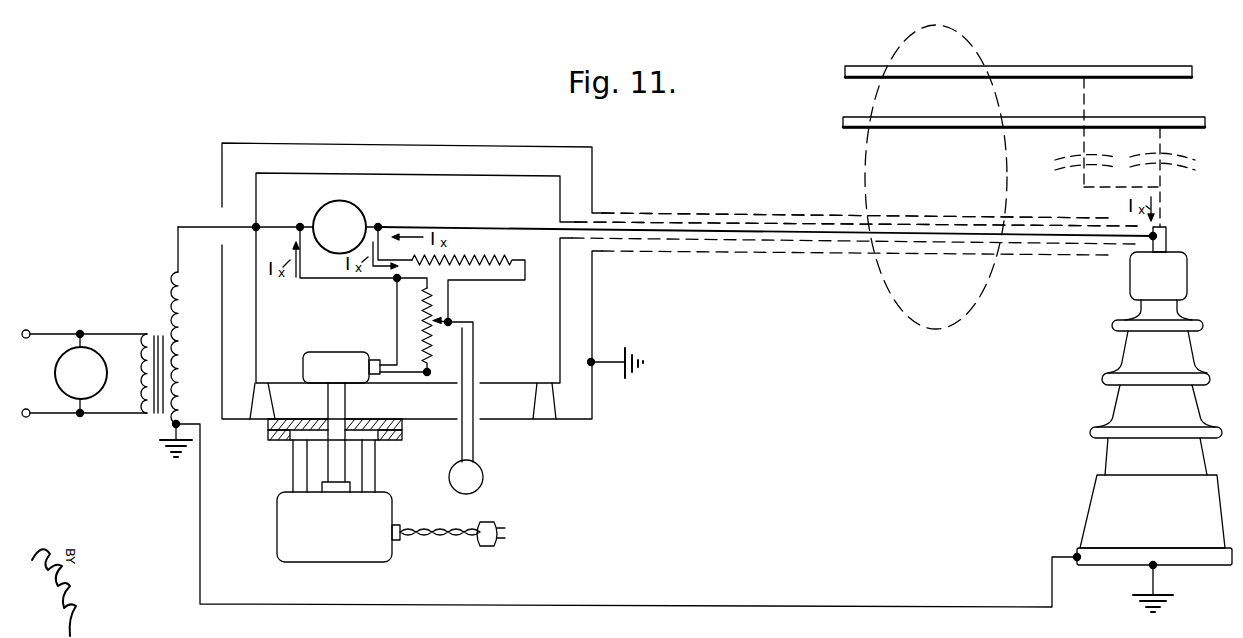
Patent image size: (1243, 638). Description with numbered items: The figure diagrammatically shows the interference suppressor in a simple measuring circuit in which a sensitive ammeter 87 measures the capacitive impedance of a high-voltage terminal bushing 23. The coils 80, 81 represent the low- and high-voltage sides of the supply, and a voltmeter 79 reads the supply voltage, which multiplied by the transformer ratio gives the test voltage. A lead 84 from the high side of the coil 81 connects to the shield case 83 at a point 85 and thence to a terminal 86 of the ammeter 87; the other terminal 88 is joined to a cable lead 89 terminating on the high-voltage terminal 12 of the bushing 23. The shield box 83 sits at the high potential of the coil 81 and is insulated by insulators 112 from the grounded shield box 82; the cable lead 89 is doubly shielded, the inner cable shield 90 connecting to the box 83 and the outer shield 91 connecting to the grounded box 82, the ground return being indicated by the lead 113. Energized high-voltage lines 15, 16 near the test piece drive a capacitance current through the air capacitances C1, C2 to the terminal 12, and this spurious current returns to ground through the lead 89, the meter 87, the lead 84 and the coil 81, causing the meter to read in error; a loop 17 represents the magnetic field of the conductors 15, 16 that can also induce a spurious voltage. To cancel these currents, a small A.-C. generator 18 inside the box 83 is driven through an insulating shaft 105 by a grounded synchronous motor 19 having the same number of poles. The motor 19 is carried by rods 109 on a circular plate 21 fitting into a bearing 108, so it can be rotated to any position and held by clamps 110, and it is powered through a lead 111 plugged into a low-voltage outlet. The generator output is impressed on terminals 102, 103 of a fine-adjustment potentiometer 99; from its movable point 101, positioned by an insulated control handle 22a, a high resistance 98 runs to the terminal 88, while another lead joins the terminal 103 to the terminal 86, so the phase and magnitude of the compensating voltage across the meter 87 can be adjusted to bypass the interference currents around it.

The high-voltage terminal 12 is at (1168, 237).
The high-voltage line 15 is at (1120, 73).
The high-voltage line 16 is at (1137, 124).
The loop 17 is at (988, 275).
The A.-C. generator 18 is at (312, 370).
The synchronous motor 19 is at (337, 552).
The circular plate 21 is at (377, 443).
The insulated control handle 22a is at (468, 347).
The terminal bushing 23 is at (1118, 402).
The voltmeter 79 is at (107, 386).
The coil 80 is at (143, 381).
The coil 81 is at (170, 308).
The shield box 82 is at (409, 145).
The shield box 83 is at (382, 176).
The lead 84 is at (204, 224).
The point 85 is at (258, 223).
The terminal 86 is at (300, 222).
The ammeter 87 is at (353, 202).
The terminal 88 is at (379, 223).
The cable lead 89 is at (632, 229).
The inner cable shield 90 is at (675, 222).
The outer shield 91 is at (720, 215).
The high resistance 98 is at (470, 267).
The potentiometer 99 is at (425, 338).
The movable point 101 is at (441, 313).
The terminal 102 is at (420, 382).
The terminal 103 is at (394, 281).
The shaft 105 is at (335, 392).
The bearing 108 is at (268, 427).
The rods 109 is at (298, 452).
The clamps 110 is at (403, 440).
The lead 111 is at (450, 537).
The insulators 112 is at (257, 401).
The ground conductor 113 is at (202, 502).
The air capacitance C1 is at (1060, 166).
The air capacitance C2 is at (1190, 165).